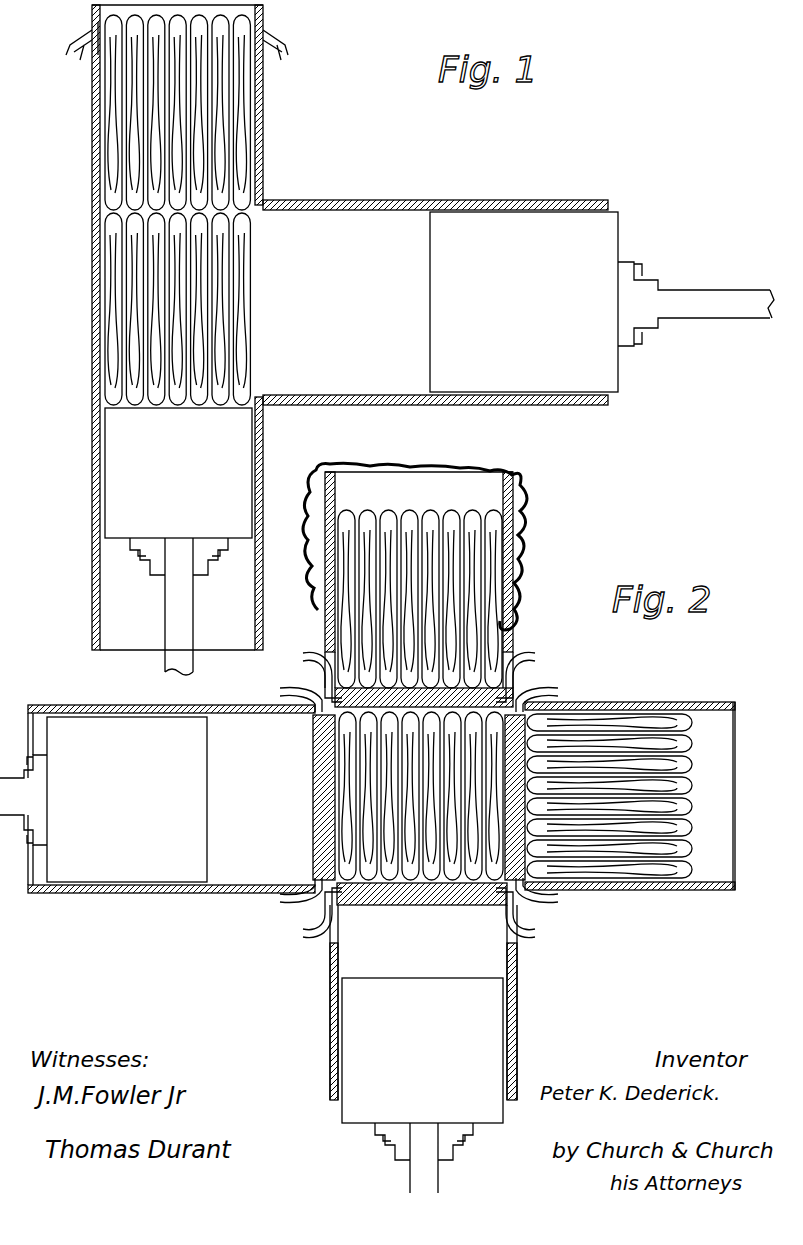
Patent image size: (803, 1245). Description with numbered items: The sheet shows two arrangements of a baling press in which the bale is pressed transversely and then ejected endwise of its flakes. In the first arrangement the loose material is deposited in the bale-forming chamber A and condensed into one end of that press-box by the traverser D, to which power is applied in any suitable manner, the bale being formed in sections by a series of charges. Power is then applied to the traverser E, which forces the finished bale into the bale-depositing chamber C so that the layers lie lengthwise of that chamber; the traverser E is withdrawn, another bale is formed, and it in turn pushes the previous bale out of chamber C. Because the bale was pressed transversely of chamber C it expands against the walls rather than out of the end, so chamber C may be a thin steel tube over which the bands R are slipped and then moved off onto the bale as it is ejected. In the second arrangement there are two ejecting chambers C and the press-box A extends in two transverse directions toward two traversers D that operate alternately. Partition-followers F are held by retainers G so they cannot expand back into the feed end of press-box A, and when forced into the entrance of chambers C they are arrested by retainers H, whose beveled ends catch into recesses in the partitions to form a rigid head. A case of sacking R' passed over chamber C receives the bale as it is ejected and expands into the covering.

In FIG. 1, the bale-forming chamber A is at (435, 302).
In FIG. 2, the bale-forming chamber A is at (171, 799).
In FIG. 1, the bale-depositing chamber C is at (263, 152).
In FIG. 2, the bale-depositing chamber C is at (512, 640).
In FIG. 1, the traverser D is at (602, 302).
In FIG. 2, the traverser D is at (258, 955).
In FIG. 1, the traverser E is at (178, 541).
In FIG. 2, the partition-follower F is at (445, 896).
In FIG. 2, the retainer G is at (405, 809).
In FIG. 2, the retainer H is at (430, 794).
In FIG. 1, the bands R is at (174, 53).
In FIG. 2, the sacking R' is at (420, 546).